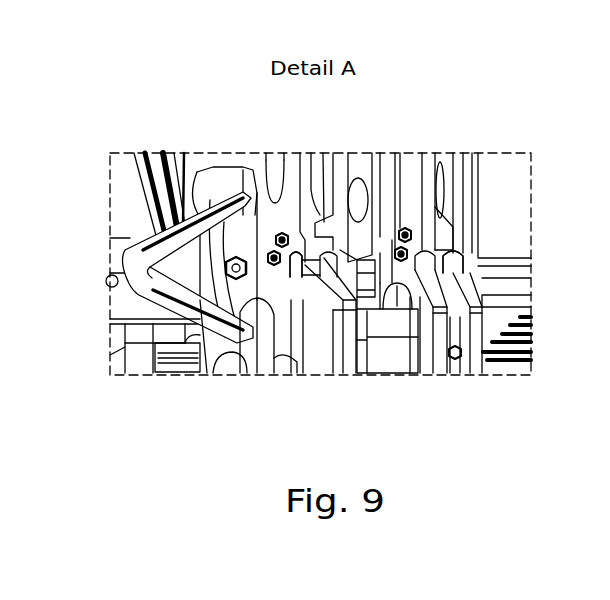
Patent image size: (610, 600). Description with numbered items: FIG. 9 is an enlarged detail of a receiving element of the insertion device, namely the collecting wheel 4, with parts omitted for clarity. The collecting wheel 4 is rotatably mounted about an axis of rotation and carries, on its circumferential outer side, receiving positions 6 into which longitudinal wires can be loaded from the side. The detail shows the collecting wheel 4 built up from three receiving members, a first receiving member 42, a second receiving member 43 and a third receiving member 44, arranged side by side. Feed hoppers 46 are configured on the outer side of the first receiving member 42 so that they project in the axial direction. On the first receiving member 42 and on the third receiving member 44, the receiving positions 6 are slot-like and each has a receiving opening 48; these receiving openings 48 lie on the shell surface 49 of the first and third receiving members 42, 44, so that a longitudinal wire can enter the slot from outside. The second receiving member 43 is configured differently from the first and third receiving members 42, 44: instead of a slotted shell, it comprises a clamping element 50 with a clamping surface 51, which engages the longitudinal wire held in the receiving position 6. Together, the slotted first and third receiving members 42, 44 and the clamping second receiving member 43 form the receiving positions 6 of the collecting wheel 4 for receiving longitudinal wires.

The collecting wheel 4 is at (273, 388).
The receiving position 6 is at (482, 256).
The first receiving member 42 is at (328, 388).
The second receiving member 43 is at (386, 388).
The third receiving member 44 is at (457, 388).
The feed hopper 46 is at (214, 352).
The receiving opening 48 is at (336, 345).
The shell surface 49 is at (317, 283).
The clamping element 50 is at (413, 355).
The clamping surface 51 is at (396, 294).